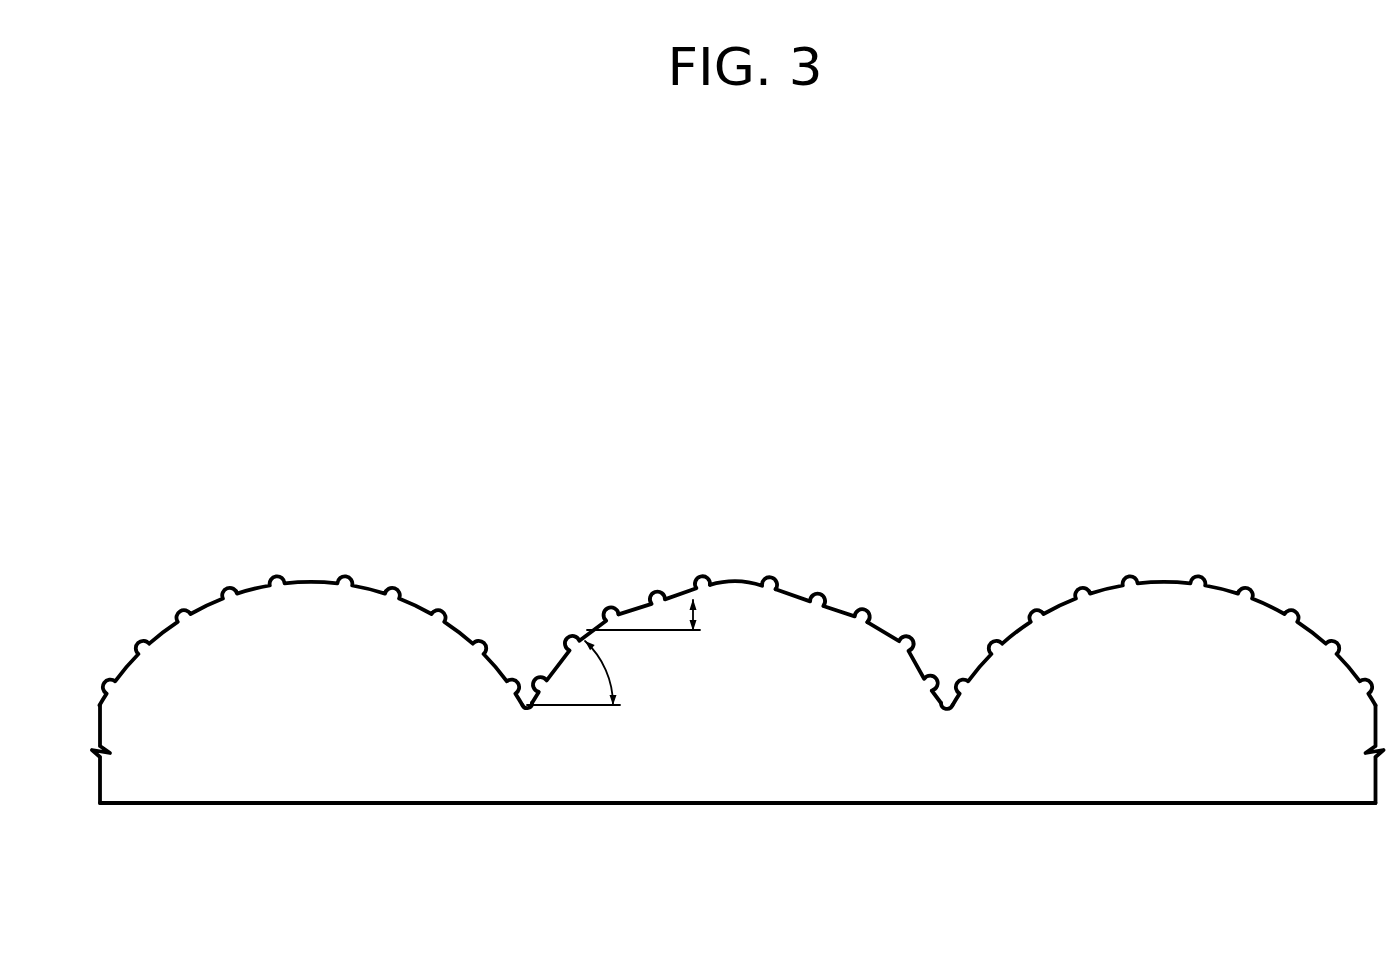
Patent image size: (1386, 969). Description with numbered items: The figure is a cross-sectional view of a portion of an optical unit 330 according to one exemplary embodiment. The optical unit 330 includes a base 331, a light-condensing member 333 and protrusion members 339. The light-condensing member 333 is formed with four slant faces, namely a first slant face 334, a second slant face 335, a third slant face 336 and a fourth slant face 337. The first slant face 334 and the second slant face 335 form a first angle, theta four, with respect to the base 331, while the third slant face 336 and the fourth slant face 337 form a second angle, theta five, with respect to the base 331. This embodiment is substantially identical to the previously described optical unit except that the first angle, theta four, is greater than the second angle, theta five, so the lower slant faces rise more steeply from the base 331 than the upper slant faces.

The optical unit 330 is at (772, 298).
The base 331 is at (753, 782).
The light-condensing member 333 is at (523, 481).
The first slant face 334 is at (526, 691).
The second slant face 335 is at (949, 691).
The third slant face 336 is at (603, 601).
The fourth slant face 337 is at (762, 566).
The protrusion members 339 is at (711, 580).